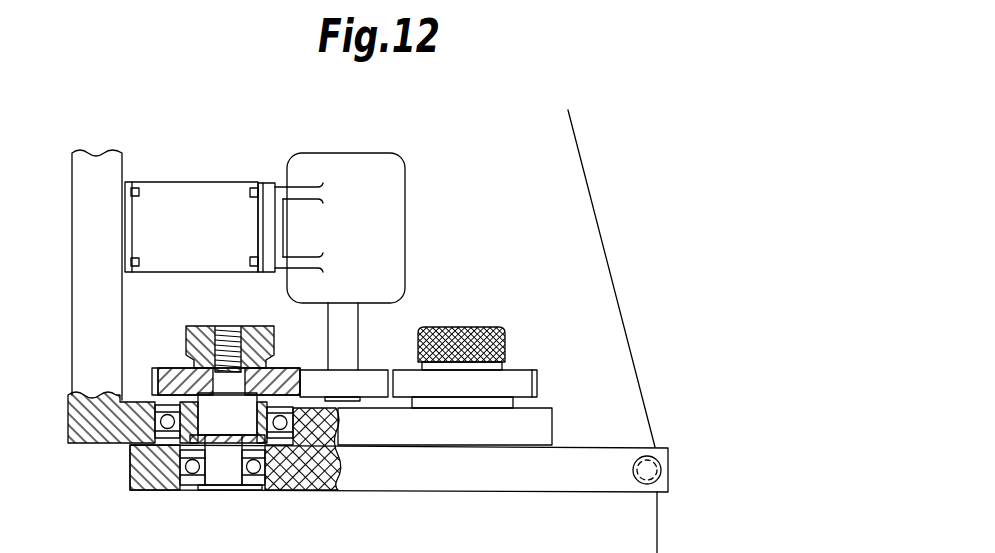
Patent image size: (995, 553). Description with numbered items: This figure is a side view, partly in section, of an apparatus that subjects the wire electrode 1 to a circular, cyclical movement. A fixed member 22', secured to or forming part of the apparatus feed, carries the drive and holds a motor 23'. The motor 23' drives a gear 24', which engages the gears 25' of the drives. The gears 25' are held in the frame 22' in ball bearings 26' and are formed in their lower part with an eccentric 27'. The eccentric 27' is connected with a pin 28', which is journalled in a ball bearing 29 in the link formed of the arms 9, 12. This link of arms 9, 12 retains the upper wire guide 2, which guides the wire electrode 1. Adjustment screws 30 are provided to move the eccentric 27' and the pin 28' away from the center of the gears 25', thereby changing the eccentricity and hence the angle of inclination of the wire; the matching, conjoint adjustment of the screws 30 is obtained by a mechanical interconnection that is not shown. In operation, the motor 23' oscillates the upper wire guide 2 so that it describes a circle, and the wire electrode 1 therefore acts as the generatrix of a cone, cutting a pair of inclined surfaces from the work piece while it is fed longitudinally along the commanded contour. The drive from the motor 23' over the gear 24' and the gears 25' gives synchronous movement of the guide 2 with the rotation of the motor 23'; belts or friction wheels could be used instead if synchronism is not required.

The wire electrode 1 is at (592, 209).
The upper wire guide 2 is at (662, 468).
The link arm 9 is at (322, 470).
The link arm 12 is at (562, 493).
The fixed member 22' is at (130, 265).
The motor 23' is at (346, 238).
The gear 24' is at (358, 357).
The gear 25' is at (361, 358).
The ball bearing 26' is at (167, 441).
The eccentric 27' is at (243, 461).
The pin 28' is at (230, 486).
The ball bearing 29 is at (183, 489).
The adjustment screw 30 is at (197, 326).